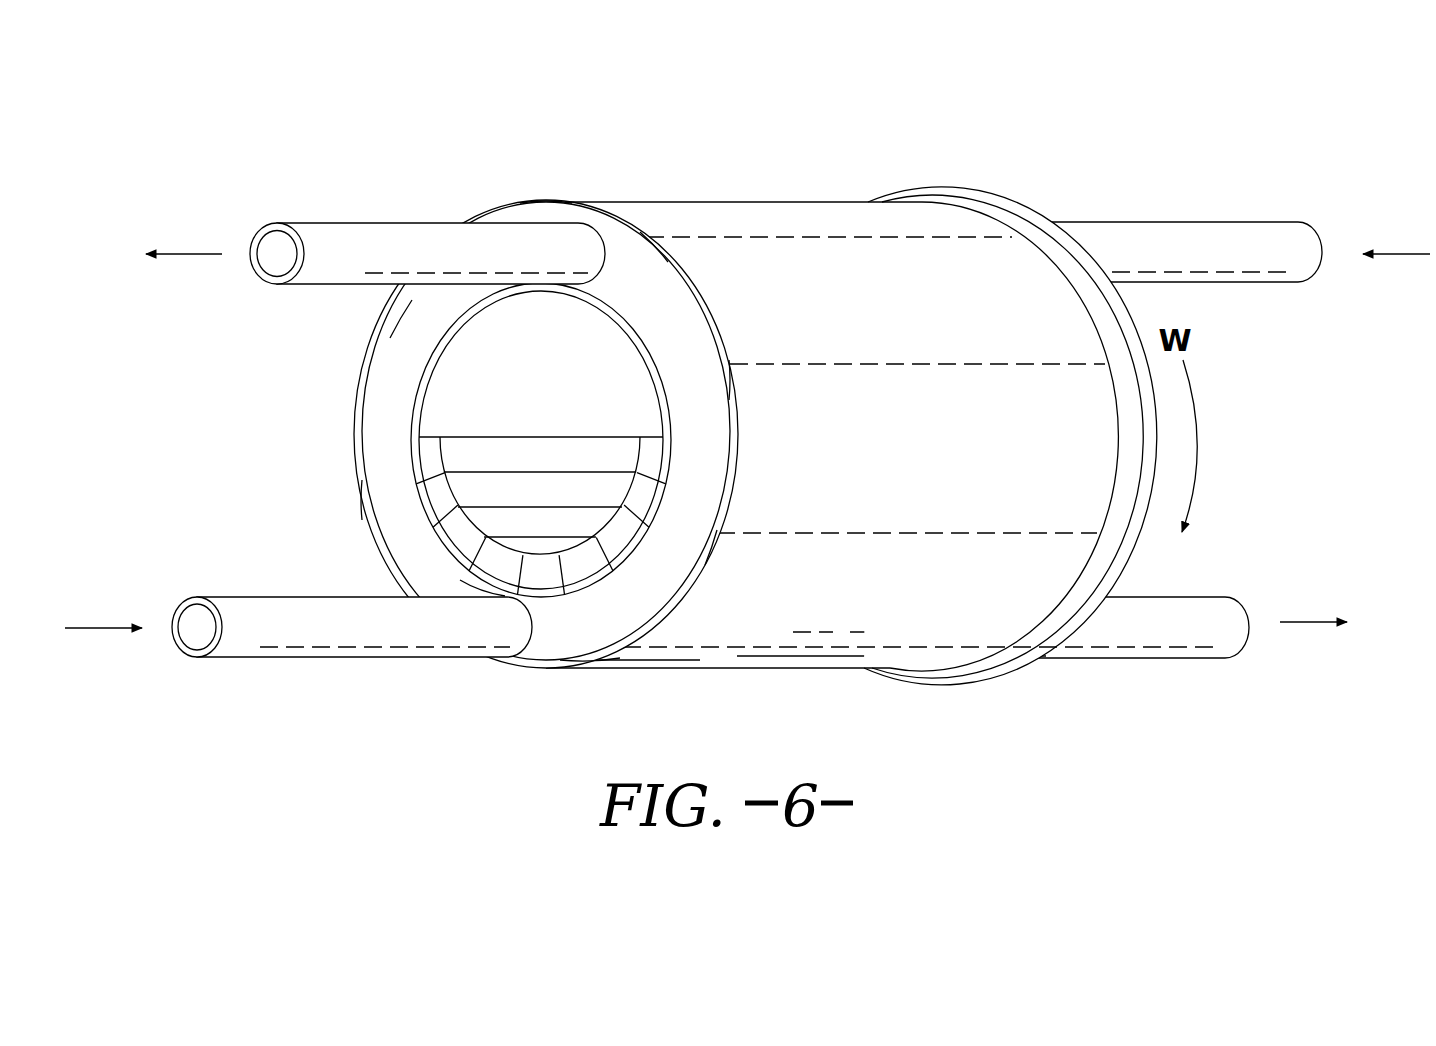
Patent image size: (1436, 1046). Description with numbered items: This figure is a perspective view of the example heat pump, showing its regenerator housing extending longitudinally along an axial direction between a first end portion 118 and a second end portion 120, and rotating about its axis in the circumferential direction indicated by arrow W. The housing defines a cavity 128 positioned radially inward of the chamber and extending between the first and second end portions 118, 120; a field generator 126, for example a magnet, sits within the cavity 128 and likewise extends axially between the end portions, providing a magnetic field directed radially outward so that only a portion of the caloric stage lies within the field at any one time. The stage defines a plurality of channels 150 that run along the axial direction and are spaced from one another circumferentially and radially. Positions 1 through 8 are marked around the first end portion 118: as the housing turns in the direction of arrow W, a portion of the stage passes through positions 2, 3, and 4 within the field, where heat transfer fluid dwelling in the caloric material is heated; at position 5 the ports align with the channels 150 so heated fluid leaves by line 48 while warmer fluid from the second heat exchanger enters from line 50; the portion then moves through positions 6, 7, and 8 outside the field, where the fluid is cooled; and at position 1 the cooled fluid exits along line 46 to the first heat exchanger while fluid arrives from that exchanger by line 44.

The first end portion 118 is at (466, 197).
The second end portion 120 is at (925, 176).
The field generator 126 is at (636, 487).
The cavity 128 is at (446, 397).
The channels 150 is at (818, 239).
The line 44 is at (262, 627).
The line 46 is at (342, 245).
The line 48 is at (1150, 632).
The line 50 is at (1225, 242).
The position 1 is at (642, 261).
The position 2 is at (705, 377).
The position 3 is at (698, 533).
The position 4 is at (590, 628).
The position 5 is at (455, 580).
The position 6 is at (384, 500).
The position 7 is at (403, 335).
The position 8 is at (536, 217).